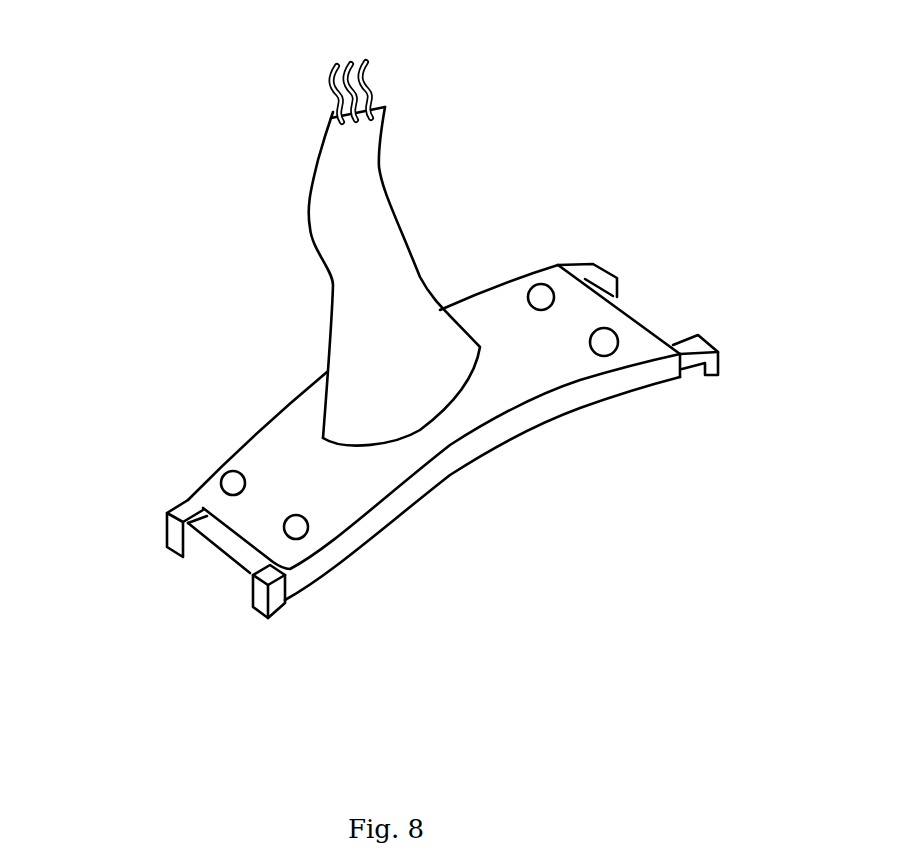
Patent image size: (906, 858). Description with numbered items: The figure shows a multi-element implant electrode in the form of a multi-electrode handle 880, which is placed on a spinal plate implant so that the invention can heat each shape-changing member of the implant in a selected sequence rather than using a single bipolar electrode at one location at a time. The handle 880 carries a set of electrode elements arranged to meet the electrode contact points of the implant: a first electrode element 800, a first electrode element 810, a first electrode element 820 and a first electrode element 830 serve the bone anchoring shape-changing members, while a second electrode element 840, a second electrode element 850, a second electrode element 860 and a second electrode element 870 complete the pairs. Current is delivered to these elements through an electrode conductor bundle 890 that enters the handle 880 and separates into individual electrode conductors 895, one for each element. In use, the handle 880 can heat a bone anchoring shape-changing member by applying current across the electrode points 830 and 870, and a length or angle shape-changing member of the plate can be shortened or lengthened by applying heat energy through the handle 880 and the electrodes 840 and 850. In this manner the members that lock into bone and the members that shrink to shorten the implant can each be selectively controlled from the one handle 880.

The first electrode element 800 is at (167, 547).
The first electrode element 810 is at (258, 618).
The first electrode element 820 is at (718, 353).
The first electrode element 830 is at (618, 263).
The second electrode element 840 is at (611, 356).
The second electrode element 850 is at (307, 540).
The second electrode element 860 is at (224, 470).
The second electrode element 870 is at (537, 278).
The multi-electrode handle 880 is at (452, 453).
The electrode conductor bundle 890 is at (325, 109).
The individual electrode conductors 895 is at (340, 58).